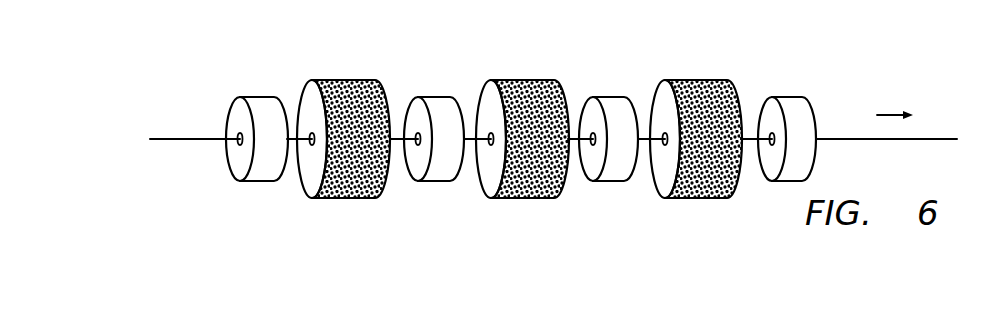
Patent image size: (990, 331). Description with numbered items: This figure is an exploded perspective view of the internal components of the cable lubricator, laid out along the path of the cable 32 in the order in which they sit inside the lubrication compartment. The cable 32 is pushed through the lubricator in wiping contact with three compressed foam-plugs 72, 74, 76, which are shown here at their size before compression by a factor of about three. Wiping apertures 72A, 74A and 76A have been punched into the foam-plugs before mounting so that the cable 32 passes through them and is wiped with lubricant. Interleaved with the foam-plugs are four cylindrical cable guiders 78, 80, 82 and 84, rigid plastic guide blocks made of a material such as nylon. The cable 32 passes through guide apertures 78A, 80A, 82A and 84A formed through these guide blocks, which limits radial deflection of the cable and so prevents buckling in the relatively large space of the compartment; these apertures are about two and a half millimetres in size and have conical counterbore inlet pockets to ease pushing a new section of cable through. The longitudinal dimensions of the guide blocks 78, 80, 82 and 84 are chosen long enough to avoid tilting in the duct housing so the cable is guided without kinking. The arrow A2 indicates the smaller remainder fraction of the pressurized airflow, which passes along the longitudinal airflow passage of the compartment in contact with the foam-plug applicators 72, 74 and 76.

The cable 32 is at (200, 138).
The cylindrical cable guider 78 is at (260, 97).
The guide aperture 78A is at (240, 142).
The foam-plug 72 is at (355, 79).
The wiping aperture 72A is at (312, 142).
The cylindrical cable guider 80 is at (440, 97).
The guide aperture 80A is at (418, 142).
The foam-plug 74 is at (533, 79).
The wiping aperture 74A is at (491, 142).
The cylindrical cable guider 82 is at (613, 97).
The guide aperture 82A is at (593, 142).
The foam-plug 76 is at (708, 79).
The wiping aperture 76A is at (665, 142).
The cylindrical cable guider 84 is at (793, 97).
The guide aperture 84A is at (772, 142).
The remainder fraction of the pressurized airflow A2 is at (882, 114).